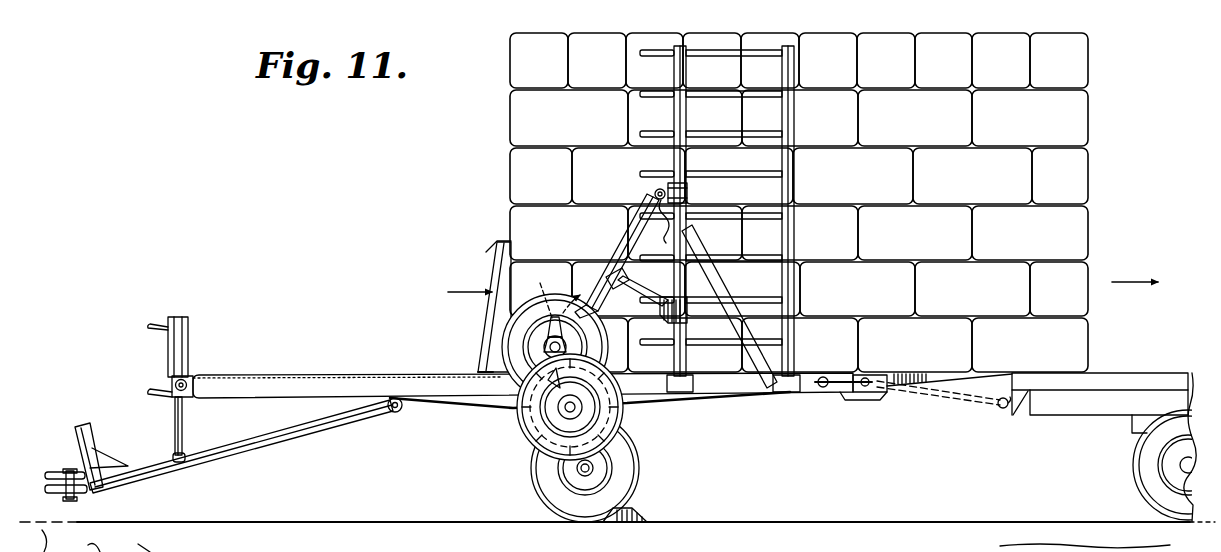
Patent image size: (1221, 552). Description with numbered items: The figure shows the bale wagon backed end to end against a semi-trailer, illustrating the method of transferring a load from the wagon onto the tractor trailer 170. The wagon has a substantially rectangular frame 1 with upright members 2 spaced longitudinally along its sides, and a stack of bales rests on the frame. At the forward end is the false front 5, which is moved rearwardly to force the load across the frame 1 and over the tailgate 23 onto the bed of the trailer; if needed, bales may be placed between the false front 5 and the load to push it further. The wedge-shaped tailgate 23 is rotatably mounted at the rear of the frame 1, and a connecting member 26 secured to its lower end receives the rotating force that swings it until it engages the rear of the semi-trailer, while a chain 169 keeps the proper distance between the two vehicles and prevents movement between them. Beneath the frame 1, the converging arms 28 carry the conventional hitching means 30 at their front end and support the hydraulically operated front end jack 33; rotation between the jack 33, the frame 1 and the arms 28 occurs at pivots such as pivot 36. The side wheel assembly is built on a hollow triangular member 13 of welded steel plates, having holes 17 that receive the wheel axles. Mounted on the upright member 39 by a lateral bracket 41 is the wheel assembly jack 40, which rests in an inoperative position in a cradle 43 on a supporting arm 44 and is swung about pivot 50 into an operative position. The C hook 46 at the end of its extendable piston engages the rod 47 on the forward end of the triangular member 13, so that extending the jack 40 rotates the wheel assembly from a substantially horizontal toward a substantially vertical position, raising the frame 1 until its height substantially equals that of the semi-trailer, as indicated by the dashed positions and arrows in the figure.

The frame 1 is at (333, 377).
The upright members 2 is at (794, 117).
The false front 5 is at (497, 239).
The triangular member 13 is at (528, 466).
The holes 17 is at (533, 498).
The tailgate 23 is at (918, 378).
The connecting member 26 is at (866, 400).
The converging arms 28 is at (272, 447).
The hitching means 30 is at (50, 474).
The front end jack 33 is at (190, 338).
The pivot 36 is at (174, 382).
The upright member 39 is at (672, 112).
The wheel assembly jack 40 is at (620, 242).
The lateral bracket 41 is at (688, 190).
The cradle 43 is at (627, 284).
The supporting arm 44 is at (652, 297).
The C hook 46 is at (563, 315).
The rod 47 is at (552, 312).
The pivot 50 is at (654, 193).
The chain 169 is at (940, 400).
The tractor trailer 170 is at (1136, 373).